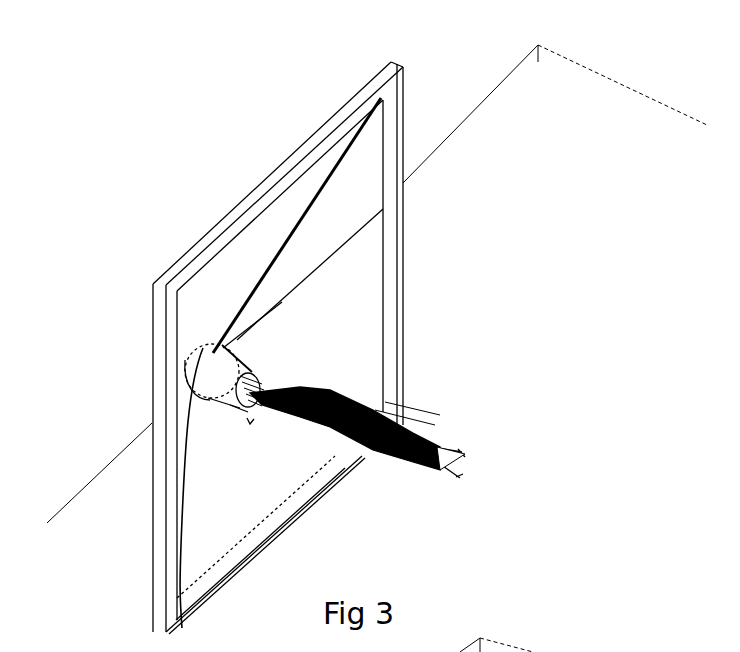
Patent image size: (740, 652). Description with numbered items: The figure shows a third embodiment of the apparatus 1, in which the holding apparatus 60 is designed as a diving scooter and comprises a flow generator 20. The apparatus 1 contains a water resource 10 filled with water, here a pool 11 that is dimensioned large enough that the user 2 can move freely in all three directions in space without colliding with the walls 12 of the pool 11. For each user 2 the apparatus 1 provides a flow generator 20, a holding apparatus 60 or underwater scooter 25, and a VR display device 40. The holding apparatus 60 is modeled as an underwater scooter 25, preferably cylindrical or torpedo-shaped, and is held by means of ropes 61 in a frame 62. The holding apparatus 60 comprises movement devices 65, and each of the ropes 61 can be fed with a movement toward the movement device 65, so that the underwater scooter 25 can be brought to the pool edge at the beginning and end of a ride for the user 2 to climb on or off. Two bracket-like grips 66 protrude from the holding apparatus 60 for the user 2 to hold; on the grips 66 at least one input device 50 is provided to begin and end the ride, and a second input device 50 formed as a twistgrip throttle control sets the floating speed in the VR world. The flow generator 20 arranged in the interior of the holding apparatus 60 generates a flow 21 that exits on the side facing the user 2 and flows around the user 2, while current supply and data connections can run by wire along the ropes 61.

The apparatus 1 is at (186, 113).
The user 2 is at (381, 472).
The water resource 10 is at (514, 341).
The pool 11 is at (493, 579).
The walls 12 is at (437, 105).
The flow generator 20 is at (197, 374).
The flow 21 is at (360, 398).
The underwater scooter 25 is at (220, 380).
The VR display device 40 is at (278, 385).
The input device 50 is at (250, 397).
The holding apparatus 60 is at (323, 346).
The ropes 61 is at (323, 192).
The frame 62 is at (163, 473).
The movement device 65 is at (392, 95).
The bracket-like grips 66 is at (250, 422).